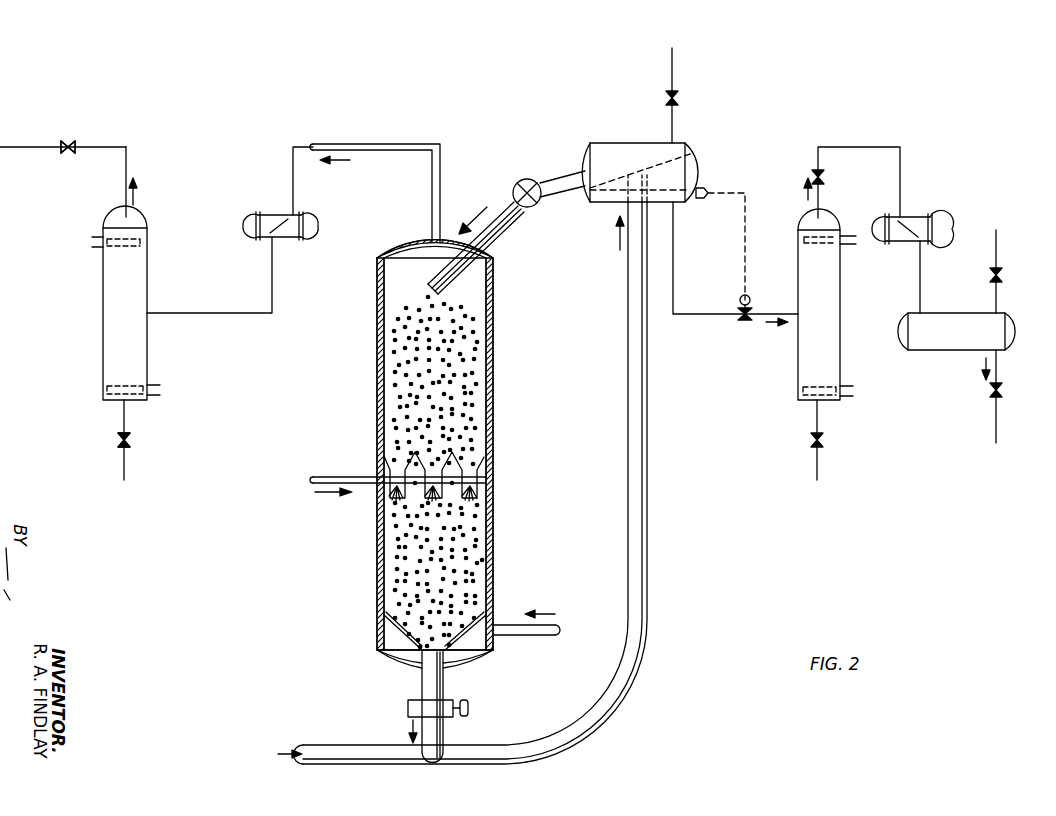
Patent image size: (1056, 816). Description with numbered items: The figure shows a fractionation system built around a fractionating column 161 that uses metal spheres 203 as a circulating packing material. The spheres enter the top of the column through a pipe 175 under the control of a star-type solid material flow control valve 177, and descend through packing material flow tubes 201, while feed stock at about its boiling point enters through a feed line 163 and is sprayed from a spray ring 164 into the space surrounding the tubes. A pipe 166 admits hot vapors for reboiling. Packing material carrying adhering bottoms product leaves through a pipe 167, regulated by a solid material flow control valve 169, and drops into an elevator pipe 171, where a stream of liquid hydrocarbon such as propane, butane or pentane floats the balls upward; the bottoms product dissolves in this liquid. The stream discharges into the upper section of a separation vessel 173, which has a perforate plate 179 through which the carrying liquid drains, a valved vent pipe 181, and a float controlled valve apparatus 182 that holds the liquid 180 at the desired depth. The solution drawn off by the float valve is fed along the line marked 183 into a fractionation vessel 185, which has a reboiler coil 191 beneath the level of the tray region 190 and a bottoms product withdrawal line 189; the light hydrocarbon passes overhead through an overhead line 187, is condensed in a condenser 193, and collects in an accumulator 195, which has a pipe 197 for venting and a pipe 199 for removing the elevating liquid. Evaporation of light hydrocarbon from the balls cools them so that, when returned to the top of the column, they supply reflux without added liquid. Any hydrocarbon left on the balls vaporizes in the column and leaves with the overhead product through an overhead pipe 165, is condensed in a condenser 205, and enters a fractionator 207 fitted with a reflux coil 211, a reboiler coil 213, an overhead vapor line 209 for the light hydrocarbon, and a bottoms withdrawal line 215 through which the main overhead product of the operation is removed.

The fractionating column 161 is at (378, 365).
The feed line 163 is at (333, 477).
The spray ring 164 is at (487, 494).
The overhead pipe 165 is at (390, 143).
The pipe 166 is at (503, 638).
The pipe 167 is at (445, 690).
The solid material flow control valve 169 is at (408, 708).
The elevator pipe 171 is at (648, 578).
The separation vessel 173 is at (612, 146).
The pipe 175 is at (575, 156).
The solid material flow control valve 177 is at (515, 182).
The perforate plate 179 is at (680, 160).
The liquid 180 is at (607, 204).
The valved vent pipe 181 is at (676, 79).
The float controlled valve apparatus 182 is at (708, 192).
The separator outlet line 183 is at (675, 252).
The fractionation vessel 185 is at (830, 275).
The overhead line 187 is at (858, 147).
The bottoms product withdrawal line 189 is at (816, 462).
The column top tray 190 is at (852, 229).
The reboiler coil 191 is at (800, 390).
The condenser 193 is at (918, 215).
The accumulator 195 is at (948, 345).
The pipe 197 is at (990, 250).
The pipe 199 is at (996, 412).
The packing material flow tubes 201 is at (476, 470).
The metal spheres 203 is at (460, 372).
The condenser 205 is at (275, 216).
The fractionator 207 is at (103, 302).
The overhead vapor line 209 is at (114, 147).
The reflux coil 211 is at (95, 243).
The reboiler coil 213 is at (103, 388).
The bottoms withdrawal line 215 is at (124, 462).